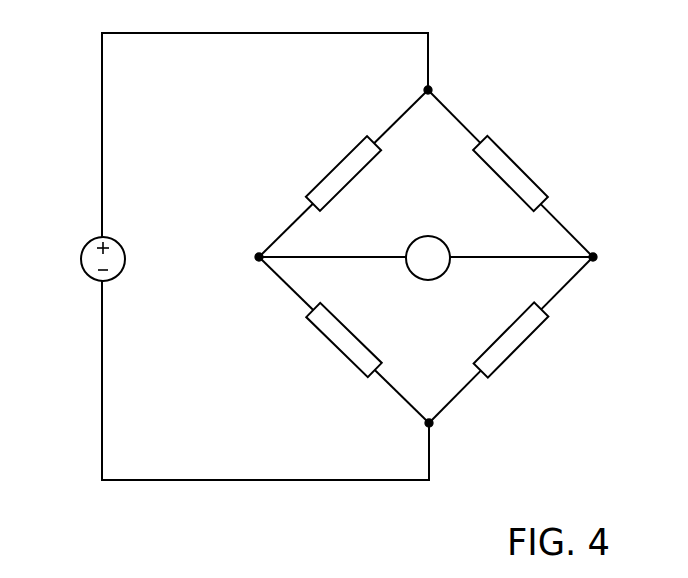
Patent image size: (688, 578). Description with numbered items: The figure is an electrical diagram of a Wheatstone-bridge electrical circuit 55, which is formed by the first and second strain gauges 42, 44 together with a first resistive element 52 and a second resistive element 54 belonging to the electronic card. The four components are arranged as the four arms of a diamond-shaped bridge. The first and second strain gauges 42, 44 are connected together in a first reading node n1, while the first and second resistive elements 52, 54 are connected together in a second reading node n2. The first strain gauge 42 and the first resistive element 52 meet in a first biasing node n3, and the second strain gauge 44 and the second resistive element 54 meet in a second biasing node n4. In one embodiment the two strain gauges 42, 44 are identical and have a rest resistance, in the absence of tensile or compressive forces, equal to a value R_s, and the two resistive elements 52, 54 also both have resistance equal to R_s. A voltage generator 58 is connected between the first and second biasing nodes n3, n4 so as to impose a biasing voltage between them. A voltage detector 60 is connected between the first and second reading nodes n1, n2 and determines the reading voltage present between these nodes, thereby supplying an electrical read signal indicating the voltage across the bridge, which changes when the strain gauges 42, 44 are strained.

The first strain gauge 42 is at (336, 176).
The second strain gauge 44 is at (336, 336).
The first resistive element 52 is at (521, 180).
The second resistive element 54 is at (515, 338).
The Wheatstone-bridge electrical circuit 55 is at (522, 82).
The voltage generator 58 is at (92, 262).
The voltage detector 60 is at (441, 250).
The first reading node n1 is at (258, 258).
The second reading node n2 is at (597, 256).
The first biasing node n3 is at (430, 90).
The second biasing node n4 is at (431, 424).